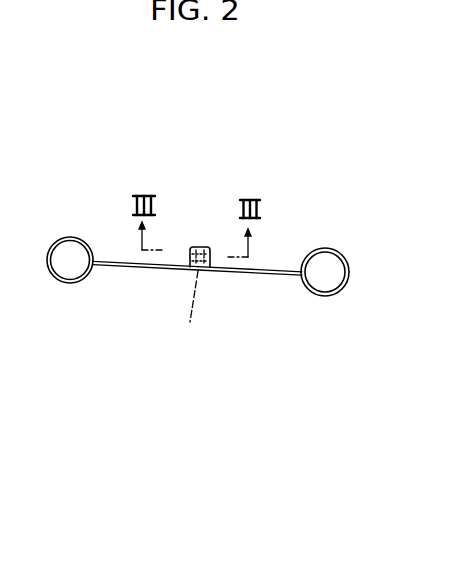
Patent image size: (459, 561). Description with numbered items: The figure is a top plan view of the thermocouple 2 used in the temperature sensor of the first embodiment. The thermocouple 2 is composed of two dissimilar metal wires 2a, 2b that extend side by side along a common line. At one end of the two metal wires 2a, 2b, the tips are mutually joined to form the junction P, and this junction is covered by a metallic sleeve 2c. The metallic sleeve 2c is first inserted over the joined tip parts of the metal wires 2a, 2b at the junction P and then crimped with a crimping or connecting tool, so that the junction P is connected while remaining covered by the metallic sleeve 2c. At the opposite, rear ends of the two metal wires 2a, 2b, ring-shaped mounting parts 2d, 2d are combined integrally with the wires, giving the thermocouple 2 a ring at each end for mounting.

The thermocouple 2 is at (96, 191).
The metal wire 2a is at (141, 272).
The metal wire 2b is at (268, 273).
The metallic sleeve 2c is at (198, 247).
The ring-shaped mounting part 2d is at (67, 284).
The junction P is at (194, 312).